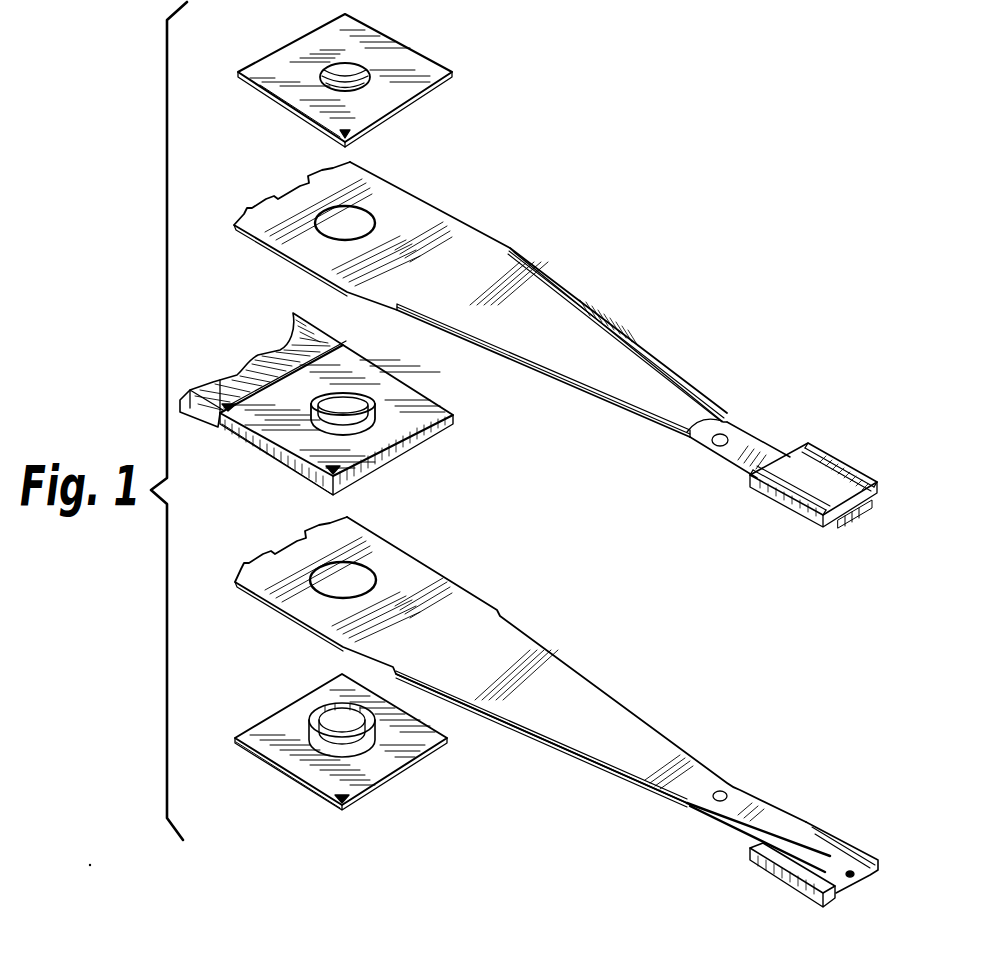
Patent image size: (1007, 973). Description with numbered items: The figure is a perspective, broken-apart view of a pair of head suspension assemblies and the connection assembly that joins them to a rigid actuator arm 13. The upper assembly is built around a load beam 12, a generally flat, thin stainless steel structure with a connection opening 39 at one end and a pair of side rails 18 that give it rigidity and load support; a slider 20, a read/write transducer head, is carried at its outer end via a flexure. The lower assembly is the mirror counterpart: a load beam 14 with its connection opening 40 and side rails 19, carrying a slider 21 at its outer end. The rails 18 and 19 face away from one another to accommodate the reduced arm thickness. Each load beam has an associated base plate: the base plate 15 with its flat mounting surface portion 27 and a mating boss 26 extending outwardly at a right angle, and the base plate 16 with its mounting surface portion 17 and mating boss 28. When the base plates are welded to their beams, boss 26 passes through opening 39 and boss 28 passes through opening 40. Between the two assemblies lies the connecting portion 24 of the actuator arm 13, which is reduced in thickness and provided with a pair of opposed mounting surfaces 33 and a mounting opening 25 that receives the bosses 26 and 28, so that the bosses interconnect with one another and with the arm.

The load beam 12 is at (477, 255).
The actuator arm 13 is at (197, 407).
The load beam 14 is at (502, 635).
The base plate 15 is at (428, 75).
The base plate 16 is at (278, 772).
The mounting surface portion 17 is at (330, 798).
The side rails 18 is at (583, 297).
The side rails 19 is at (607, 767).
The slider 20 is at (800, 480).
The slider 21 is at (777, 873).
The connecting portion 24 is at (318, 475).
The mounting opening 25 is at (350, 404).
The mating boss 26 is at (347, 80).
The mounting surface portion 27 is at (297, 112).
The mating boss 28 is at (367, 740).
The mounting surfaces 33 is at (293, 433).
The connection opening 39 is at (355, 215).
The connection opening 40 is at (353, 570).